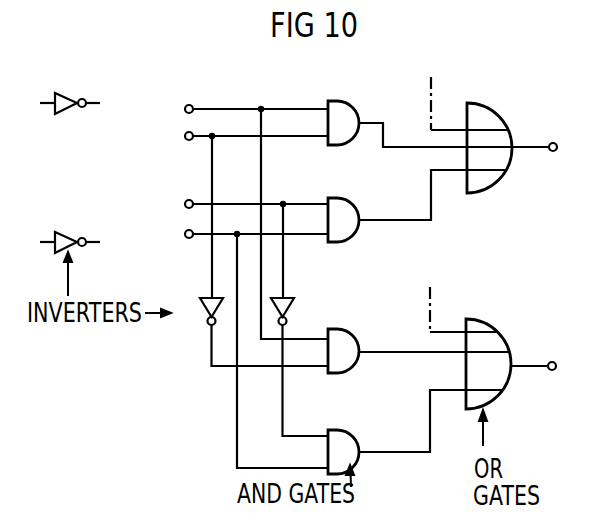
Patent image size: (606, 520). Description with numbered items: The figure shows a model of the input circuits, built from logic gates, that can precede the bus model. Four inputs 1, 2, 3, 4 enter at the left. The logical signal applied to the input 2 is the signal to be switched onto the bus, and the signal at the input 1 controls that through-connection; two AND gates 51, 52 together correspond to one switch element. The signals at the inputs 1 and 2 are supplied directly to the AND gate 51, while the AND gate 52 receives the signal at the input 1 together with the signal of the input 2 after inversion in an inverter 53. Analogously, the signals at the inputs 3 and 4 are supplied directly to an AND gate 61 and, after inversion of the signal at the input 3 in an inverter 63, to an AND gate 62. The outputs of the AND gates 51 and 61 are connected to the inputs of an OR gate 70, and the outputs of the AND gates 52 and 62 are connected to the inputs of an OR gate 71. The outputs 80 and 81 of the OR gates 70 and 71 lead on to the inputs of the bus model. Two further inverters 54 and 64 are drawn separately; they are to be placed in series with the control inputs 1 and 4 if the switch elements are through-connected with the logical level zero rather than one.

The input 1 is at (249, 107).
The input 2 is at (248, 135).
The input 3 is at (248, 203).
The input 4 is at (248, 233).
The AND gate 51 is at (438, 115).
The AND gate 52 is at (419, 349).
The inverter 53 is at (250, 332).
The inverter 54 is at (70, 91).
The AND gate 61 is at (417, 206).
The AND gate 62 is at (415, 432).
The inverter 63 is at (299, 367).
The inverter 64 is at (70, 231).
The OR gate 70 is at (471, 135).
The OR gate 71 is at (489, 348).
The output 80 is at (567, 149).
The output 81 is at (564, 368).